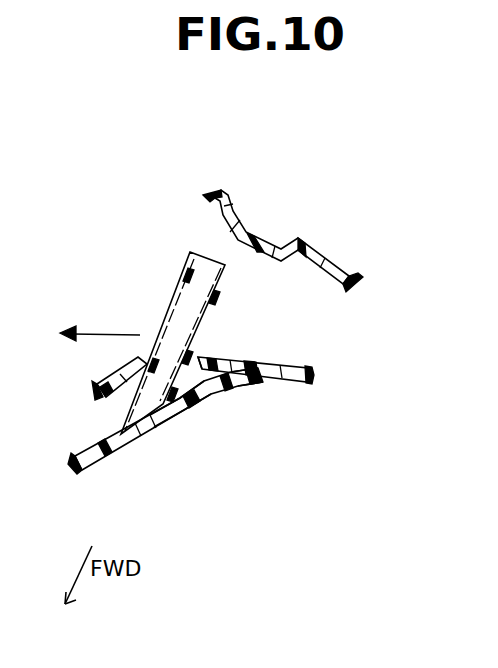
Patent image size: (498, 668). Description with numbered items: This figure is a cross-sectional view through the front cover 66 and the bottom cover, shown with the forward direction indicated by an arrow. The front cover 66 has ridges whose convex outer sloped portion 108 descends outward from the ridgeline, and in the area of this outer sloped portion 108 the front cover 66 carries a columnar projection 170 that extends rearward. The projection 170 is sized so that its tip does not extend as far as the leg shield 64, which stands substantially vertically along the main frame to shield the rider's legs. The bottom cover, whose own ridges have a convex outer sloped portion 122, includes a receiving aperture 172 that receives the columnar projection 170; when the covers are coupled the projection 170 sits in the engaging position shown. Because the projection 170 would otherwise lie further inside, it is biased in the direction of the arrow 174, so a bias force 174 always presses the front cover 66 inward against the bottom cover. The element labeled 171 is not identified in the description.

The leg shield 64 is at (243, 200).
The front cover 66 is at (113, 443).
The outer sloped portion 108 is at (187, 400).
The outer sloped portion 122 is at (283, 383).
The columnar projection 170 is at (174, 293).
The lateral member 171 is at (252, 354).
The receiving aperture 172 is at (198, 355).
The arrow 174 is at (110, 333).